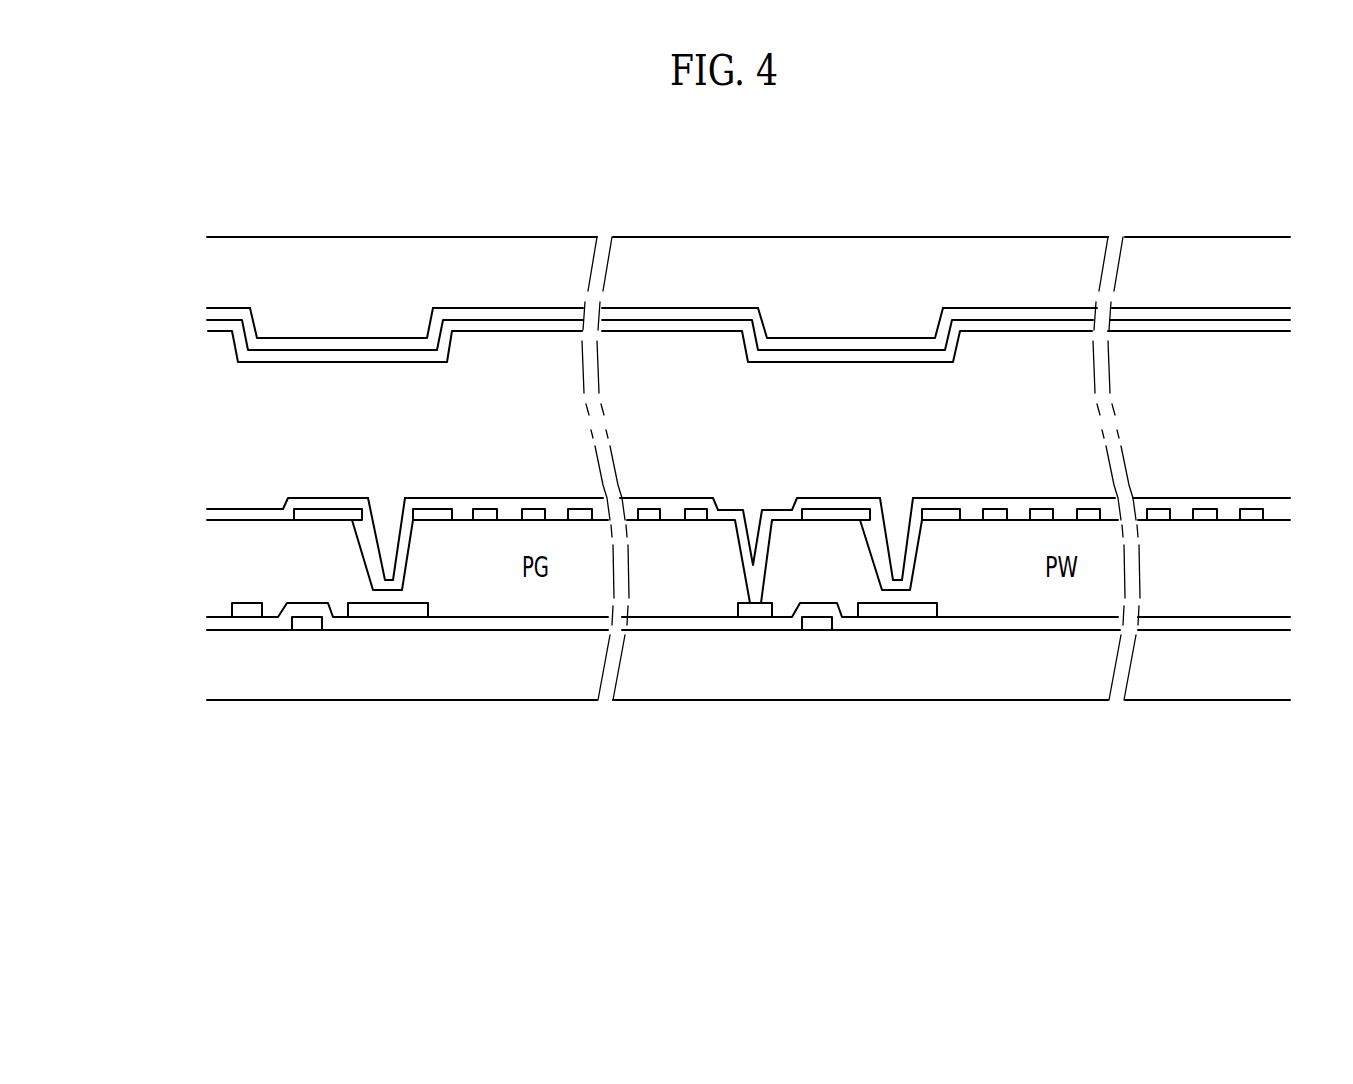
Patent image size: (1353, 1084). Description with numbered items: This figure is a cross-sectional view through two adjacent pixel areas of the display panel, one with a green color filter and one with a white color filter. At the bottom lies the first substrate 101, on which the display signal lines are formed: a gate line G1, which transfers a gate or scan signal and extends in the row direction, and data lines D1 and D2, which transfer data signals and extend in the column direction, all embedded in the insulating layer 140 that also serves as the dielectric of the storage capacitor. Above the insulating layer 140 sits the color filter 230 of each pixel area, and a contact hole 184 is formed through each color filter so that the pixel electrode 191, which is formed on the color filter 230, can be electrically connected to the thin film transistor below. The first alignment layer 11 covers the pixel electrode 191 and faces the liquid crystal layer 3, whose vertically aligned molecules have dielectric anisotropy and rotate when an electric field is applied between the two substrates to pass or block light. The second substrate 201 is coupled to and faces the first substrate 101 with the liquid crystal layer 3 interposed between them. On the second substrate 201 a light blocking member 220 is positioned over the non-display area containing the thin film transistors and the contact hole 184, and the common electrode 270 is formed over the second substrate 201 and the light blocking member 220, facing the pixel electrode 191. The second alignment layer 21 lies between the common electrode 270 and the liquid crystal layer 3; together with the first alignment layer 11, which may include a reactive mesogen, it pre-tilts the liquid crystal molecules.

The second substrate 201 is at (225, 273).
The common electrode 270 is at (218, 312).
The light blocking member 220 is at (343, 322).
The second alignment layer 21 is at (210, 327).
The liquid crystal layer 3 is at (232, 420).
The first alignment layer 11 is at (210, 513).
The contact hole 184 is at (396, 517).
The color filter 230 is at (225, 563).
The pixel electrode 191 is at (485, 520).
The insulating layer 140 is at (210, 620).
The first substrate 101 is at (225, 667).
The data line D1 is at (245, 617).
The data line D2 is at (755, 617).
The gate line G1 is at (308, 630).